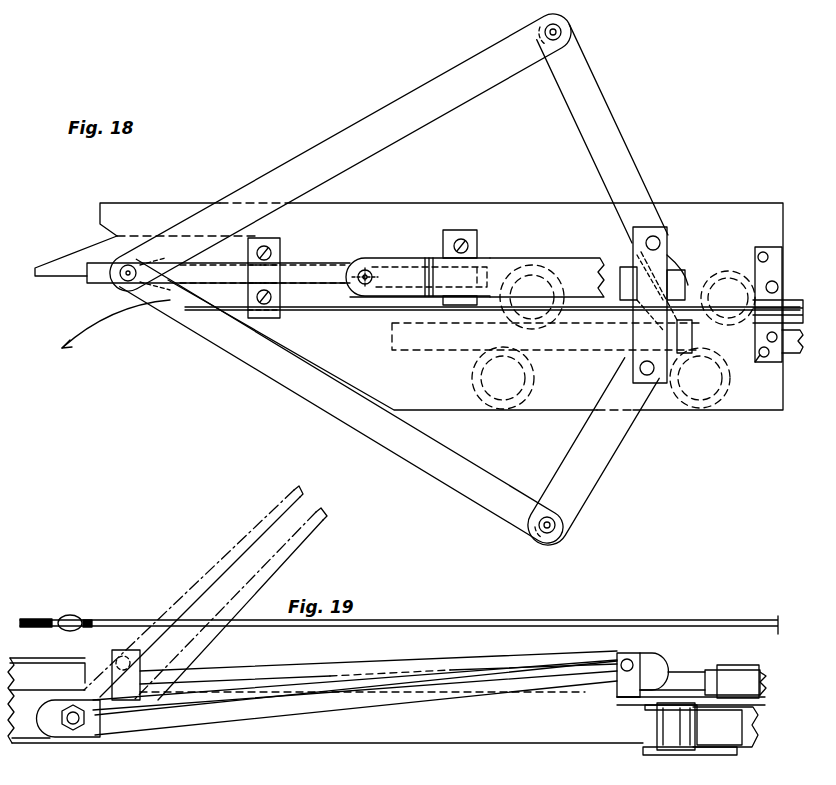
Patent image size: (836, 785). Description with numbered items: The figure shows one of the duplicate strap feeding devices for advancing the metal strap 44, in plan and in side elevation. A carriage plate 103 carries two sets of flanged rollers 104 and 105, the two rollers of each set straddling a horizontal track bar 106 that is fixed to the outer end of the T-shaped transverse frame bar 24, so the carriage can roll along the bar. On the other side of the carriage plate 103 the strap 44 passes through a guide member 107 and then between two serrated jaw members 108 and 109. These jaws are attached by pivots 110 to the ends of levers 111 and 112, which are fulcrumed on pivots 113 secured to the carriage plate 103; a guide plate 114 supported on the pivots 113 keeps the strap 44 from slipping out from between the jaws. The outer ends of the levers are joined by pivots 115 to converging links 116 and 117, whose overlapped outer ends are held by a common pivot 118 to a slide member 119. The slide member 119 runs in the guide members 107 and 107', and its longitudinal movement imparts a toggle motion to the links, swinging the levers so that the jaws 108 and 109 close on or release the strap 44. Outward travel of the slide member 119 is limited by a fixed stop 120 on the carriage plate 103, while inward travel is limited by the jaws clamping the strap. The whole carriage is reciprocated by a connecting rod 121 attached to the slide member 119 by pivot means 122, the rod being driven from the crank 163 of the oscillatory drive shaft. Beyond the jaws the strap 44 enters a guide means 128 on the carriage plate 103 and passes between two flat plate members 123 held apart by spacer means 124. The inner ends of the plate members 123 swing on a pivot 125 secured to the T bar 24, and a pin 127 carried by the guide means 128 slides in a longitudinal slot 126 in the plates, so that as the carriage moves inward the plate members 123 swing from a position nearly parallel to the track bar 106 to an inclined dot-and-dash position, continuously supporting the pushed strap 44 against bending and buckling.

In FIG. 18, the carriage plate 103 is at (404, 207).
In FIG. 19, the carriage plate 103 is at (691, 722).
In FIG. 18, the rollers 104 is at (778, 360).
In FIG. 19, the rollers 104 is at (658, 738).
In FIG. 18, the rollers 105 is at (540, 360).
In FIG. 18, the track bar 106 is at (392, 336).
In FIG. 19, the track bar 106 is at (464, 742).
In FIG. 18, the guide member 107 is at (285, 272).
In FIG. 18, the guide member 107' is at (478, 237).
In FIG. 18, the jaw member 108 is at (702, 283).
In FIG. 19, the jaw member 108 is at (745, 672).
In FIG. 18, the jaw member 109 is at (700, 378).
In FIG. 18, the pivots 110 is at (640, 338).
In FIG. 18, the lever 111 is at (598, 135).
In FIG. 18, the lever 112 is at (603, 464).
In FIG. 18, the pivots 113 is at (655, 238).
In FIG. 18, the guide plate 114 is at (665, 258).
In FIG. 18, the pivots 115 is at (548, 42).
In FIG. 18, the link 116 is at (400, 114).
In FIG. 18, the link 117 is at (462, 473).
In FIG. 18, the common pivot 118 is at (130, 266).
In FIG. 18, the slide member 119 is at (205, 275).
In FIG. 18, the fixed stop 120 is at (82, 270).
In FIG. 18, the connecting rod 121 is at (507, 258).
In FIG. 19, the connecting rod 121 is at (453, 628).
In FIG. 18, the pivot means 122 is at (372, 268).
In FIG. 18, the plate members 123 is at (800, 312).
In FIG. 19, the plate members 123 is at (198, 578).
In FIG. 18, the spacer means 124 is at (778, 370).
In FIG. 19, the pivot 125 is at (66, 735).
In FIG. 19, the slot 126 is at (245, 540).
In FIG. 19, the pin 127 is at (627, 658).
In FIG. 18, the guide means 128 is at (775, 248).
In FIG. 19, the guide means 128 is at (620, 680).
In FIG. 19, the crank 163 is at (40, 622).
In FIG. 19, the transverse frame bar 24 is at (46, 691).
In FIG. 18, the metal strap 44 is at (750, 236).
In FIG. 19, the metal strap 44 is at (50, 680).